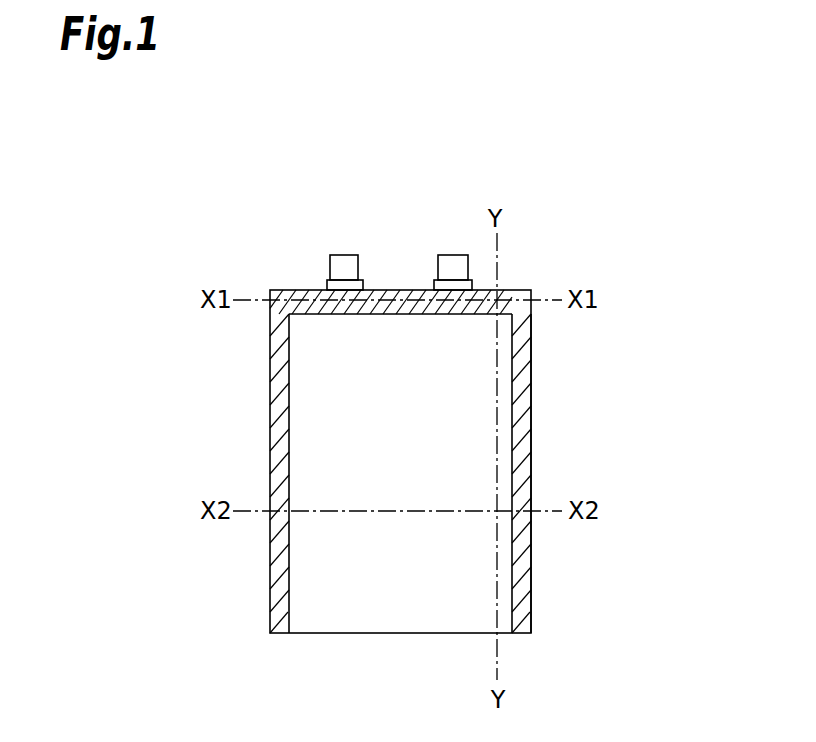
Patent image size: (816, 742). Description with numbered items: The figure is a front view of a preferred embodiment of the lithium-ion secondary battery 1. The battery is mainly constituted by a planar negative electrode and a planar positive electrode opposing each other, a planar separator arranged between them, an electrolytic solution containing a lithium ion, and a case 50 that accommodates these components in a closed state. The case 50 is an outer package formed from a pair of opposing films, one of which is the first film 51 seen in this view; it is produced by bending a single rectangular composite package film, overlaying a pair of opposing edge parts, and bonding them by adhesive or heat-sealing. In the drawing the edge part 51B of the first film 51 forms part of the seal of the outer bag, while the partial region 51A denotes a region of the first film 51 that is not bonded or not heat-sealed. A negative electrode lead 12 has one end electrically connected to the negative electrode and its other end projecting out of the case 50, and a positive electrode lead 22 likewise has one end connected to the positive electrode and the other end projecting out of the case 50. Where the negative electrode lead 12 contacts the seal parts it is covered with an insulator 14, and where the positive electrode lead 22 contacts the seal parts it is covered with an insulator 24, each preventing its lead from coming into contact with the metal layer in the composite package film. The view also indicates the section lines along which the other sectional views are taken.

The lithium-ion secondary battery 1 is at (523, 170).
The negative electrode lead 12 is at (343, 255).
The insulator 14 is at (326, 288).
The positive electrode lead 22 is at (452, 255).
The insulator 24 is at (434, 288).
The case 50 is at (532, 450).
The first film 51 is at (622, 358).
The partial region 51A is at (478, 372).
The edge part 51B is at (518, 416).